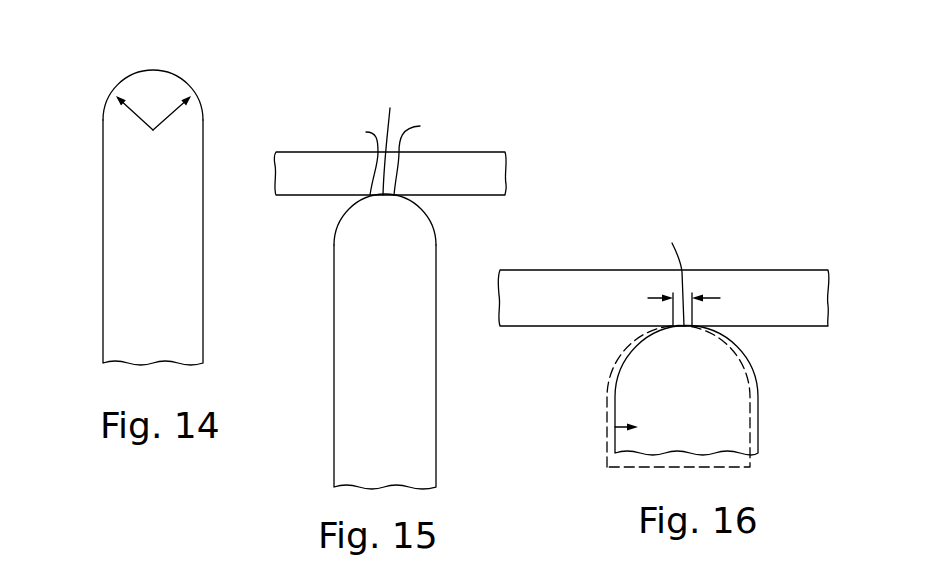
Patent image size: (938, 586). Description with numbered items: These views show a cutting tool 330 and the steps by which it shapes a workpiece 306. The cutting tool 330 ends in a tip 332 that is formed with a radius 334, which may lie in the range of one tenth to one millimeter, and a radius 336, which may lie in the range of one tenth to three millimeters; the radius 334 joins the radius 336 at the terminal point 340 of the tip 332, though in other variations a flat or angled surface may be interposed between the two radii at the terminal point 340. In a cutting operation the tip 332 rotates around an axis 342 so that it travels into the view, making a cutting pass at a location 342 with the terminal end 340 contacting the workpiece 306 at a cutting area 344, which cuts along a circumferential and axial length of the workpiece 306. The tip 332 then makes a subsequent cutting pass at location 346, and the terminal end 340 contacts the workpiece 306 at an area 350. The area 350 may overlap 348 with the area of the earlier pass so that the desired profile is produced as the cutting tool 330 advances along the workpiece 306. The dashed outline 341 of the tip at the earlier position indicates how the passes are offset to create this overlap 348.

In FIG. 15, the workpiece 306 is at (338, 181).
In FIG. 16, the workpiece 306 is at (585, 309).
In FIG. 14, the cutting tool 330 is at (98, 206).
In FIG. 15, the cutting tool 330 is at (329, 295).
In FIG. 14, the tip 332 is at (137, 72).
In FIG. 15, the tip 332 is at (420, 205).
In FIG. 16, the tip 332 is at (730, 333).
In FIG. 14, the radius 334 is at (138, 118).
In FIG. 14, the radius 336 is at (170, 115).
In FIG. 14, the terminal point 340 is at (153, 70).
In FIG. 15, the terminal point 340 is at (424, 156).
In FIG. 15, the dome side / original position outline 341 is at (338, 232).
In FIG. 16, the dome side / original position outline 341 is at (601, 399).
In FIG. 15, the axis 342 is at (351, 160).
In FIG. 15, the cutting area 344 is at (389, 141).
In FIG. 16, the location 346 is at (624, 360).
In FIG. 16, the overlap 348 is at (703, 298).
In FIG. 16, the area 350 is at (672, 274).